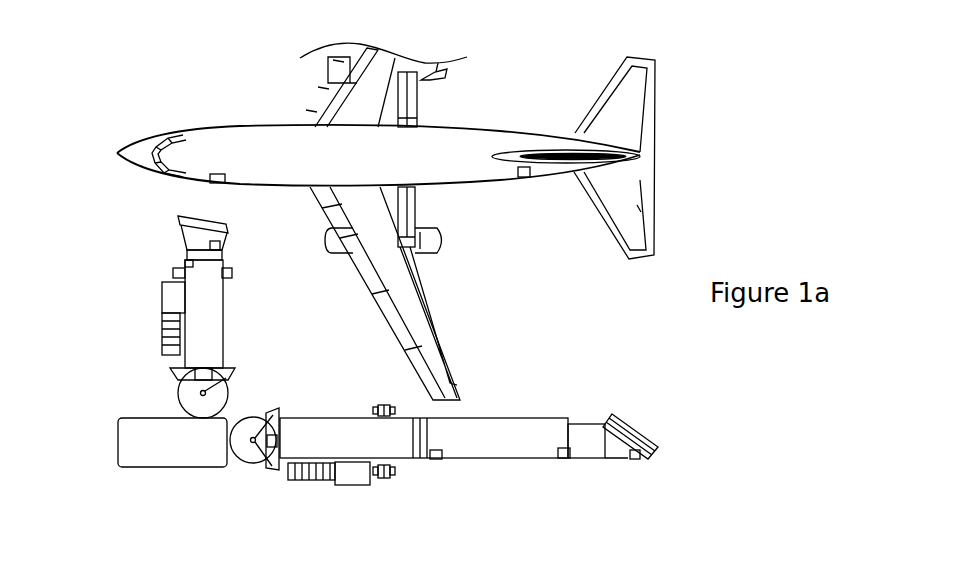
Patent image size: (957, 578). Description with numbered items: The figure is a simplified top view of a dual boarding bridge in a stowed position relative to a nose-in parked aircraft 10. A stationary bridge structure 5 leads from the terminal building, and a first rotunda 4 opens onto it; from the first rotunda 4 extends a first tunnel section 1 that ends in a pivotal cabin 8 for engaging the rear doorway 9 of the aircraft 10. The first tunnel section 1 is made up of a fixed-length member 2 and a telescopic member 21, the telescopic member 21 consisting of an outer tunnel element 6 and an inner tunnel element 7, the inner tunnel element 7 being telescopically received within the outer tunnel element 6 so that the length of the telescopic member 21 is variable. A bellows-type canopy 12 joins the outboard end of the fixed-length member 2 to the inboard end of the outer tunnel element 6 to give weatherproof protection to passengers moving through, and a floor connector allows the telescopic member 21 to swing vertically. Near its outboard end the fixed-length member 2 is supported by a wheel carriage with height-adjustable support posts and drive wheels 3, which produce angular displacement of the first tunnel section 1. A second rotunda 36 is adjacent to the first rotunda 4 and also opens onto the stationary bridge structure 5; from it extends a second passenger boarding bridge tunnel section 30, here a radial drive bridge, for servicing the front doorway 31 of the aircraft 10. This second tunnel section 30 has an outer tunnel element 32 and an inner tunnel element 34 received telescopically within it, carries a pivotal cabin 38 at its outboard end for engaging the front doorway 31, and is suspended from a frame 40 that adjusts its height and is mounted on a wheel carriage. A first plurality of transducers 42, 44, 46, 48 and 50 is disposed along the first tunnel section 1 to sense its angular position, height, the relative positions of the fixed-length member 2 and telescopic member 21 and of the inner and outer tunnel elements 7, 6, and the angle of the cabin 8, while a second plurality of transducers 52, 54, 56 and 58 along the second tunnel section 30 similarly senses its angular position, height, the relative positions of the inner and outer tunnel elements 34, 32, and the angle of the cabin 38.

The first tunnel section 1 is at (510, 394).
The fixed-length member 2 is at (341, 430).
The drive wheels 3 is at (395, 481).
The first rotunda 4 is at (250, 466).
The stationary bridge structure 5 is at (97, 434).
The outer tunnel element 6 is at (494, 462).
The inner tunnel element 7 is at (581, 459).
The pivotal cabin 8 is at (617, 405).
The rear doorway 9 is at (524, 178).
The aircraft 10 is at (319, 168).
The bellows-type canopy 12 is at (422, 460).
The telescopic member 21 is at (530, 452).
The second passenger boarding bridge tunnel section 30 is at (240, 316).
The front doorway 31 is at (208, 179).
The outer tunnel element 32 is at (206, 344).
The inner tunnel element 34 is at (224, 258).
The second rotunda 36 is at (180, 392).
The pivotal cabin 38 is at (188, 236).
The frame 40 is at (173, 274).
The transducer 42 is at (252, 462).
The transducer 44 is at (280, 440).
The transducer 46 is at (441, 459).
The transducer 48 is at (567, 460).
The transducer 50 is at (640, 461).
The transducer 52 is at (201, 395).
The transducer 54 is at (224, 362).
The transducer 56 is at (185, 264).
The transducer 58 is at (224, 243).